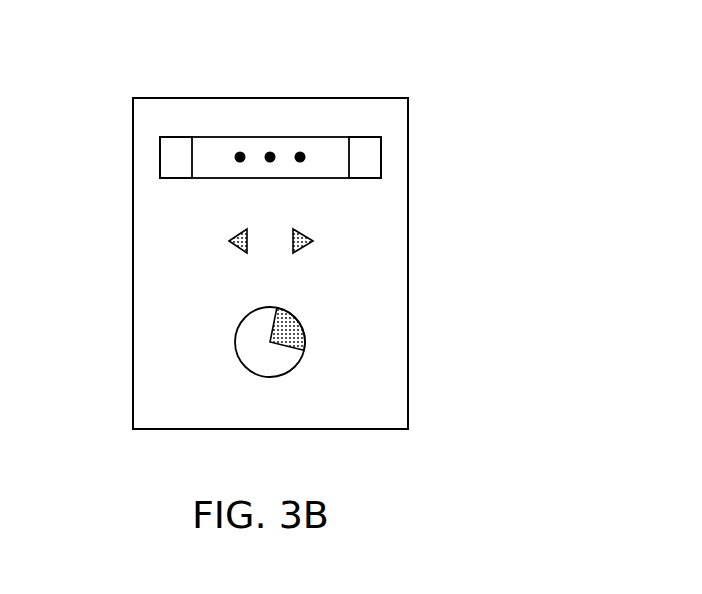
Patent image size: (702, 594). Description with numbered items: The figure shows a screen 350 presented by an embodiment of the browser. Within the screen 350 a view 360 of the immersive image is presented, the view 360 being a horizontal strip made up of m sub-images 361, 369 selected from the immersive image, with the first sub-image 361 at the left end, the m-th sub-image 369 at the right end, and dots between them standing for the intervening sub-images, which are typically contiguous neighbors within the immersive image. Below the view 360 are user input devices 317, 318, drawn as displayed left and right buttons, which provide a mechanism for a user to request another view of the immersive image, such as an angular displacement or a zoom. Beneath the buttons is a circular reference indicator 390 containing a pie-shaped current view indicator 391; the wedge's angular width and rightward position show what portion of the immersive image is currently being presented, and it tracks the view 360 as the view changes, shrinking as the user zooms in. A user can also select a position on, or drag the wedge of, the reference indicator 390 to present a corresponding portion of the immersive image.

The screen 350 is at (324, 232).
The view 360 is at (335, 160).
The sub-image 361 is at (172, 136).
The sub-image 369 is at (358, 136).
The user input device 317 is at (232, 242).
The user input device 318 is at (310, 242).
The reference indicator 390 is at (181, 342).
The current view indicator 391 is at (371, 334).